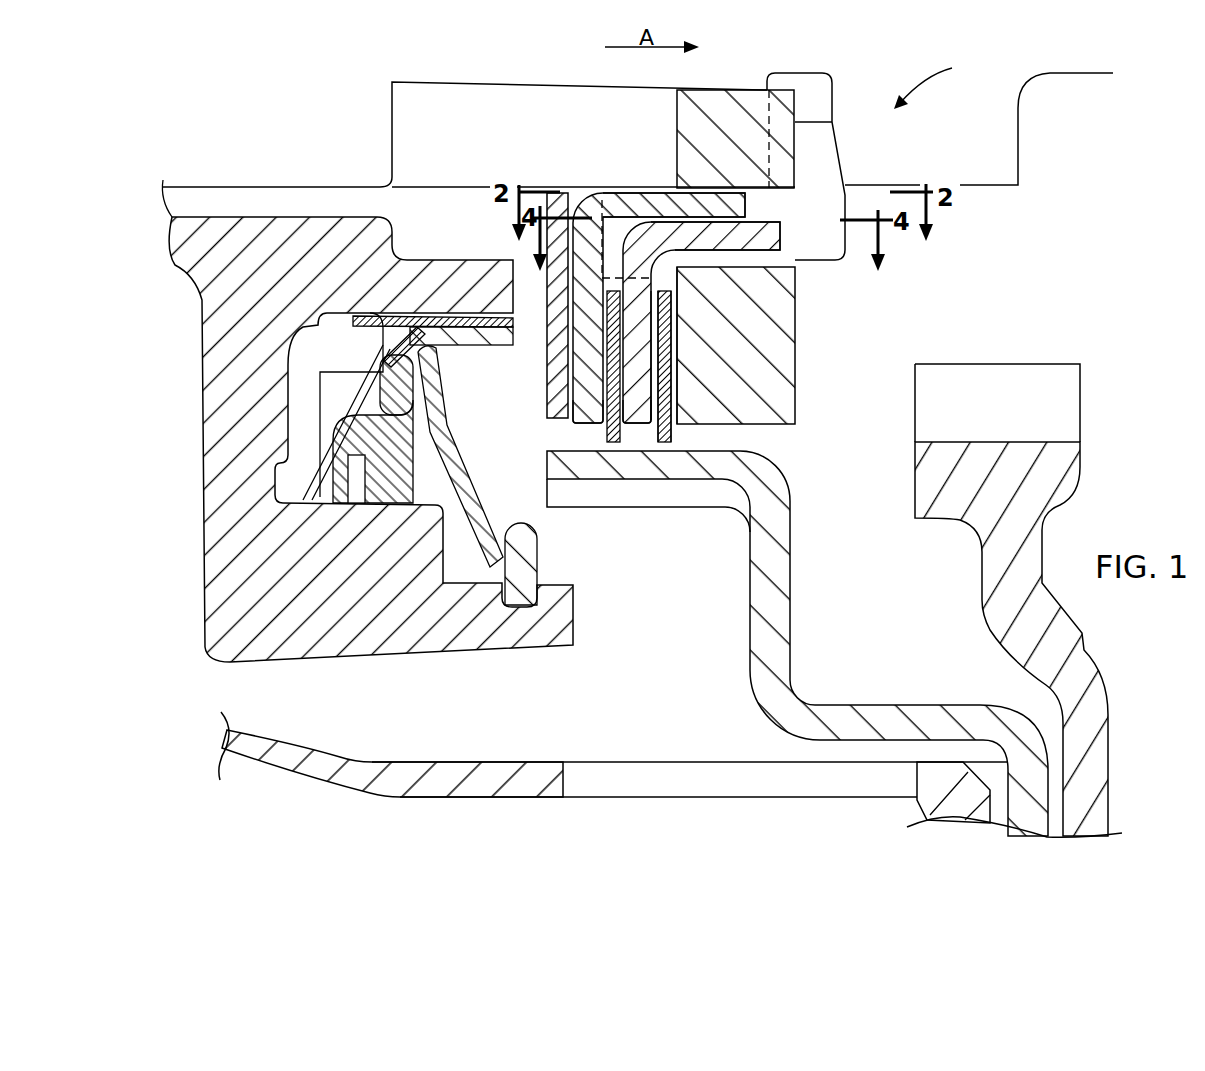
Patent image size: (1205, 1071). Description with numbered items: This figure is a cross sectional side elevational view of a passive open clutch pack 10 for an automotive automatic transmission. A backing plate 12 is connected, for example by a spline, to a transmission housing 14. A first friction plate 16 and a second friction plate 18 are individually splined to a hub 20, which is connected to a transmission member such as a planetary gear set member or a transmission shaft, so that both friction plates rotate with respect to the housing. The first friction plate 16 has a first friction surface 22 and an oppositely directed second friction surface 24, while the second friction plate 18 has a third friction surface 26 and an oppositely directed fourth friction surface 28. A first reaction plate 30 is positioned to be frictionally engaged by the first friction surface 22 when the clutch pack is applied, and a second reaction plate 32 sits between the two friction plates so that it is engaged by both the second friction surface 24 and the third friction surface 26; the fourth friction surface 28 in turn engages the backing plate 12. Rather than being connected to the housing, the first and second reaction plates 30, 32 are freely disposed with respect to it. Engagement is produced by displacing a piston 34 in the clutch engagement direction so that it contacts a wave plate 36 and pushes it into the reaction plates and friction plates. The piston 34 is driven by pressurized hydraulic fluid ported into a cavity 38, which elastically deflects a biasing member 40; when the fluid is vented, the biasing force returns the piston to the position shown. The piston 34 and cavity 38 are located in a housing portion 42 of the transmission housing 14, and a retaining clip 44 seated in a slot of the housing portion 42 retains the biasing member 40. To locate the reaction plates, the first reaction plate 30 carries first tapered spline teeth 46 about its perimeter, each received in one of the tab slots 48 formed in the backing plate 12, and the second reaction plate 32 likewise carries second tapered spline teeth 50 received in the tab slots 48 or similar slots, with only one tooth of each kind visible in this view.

The passive open clutch pack 10 is at (939, 76).
The backing plate 12 is at (780, 287).
The transmission housing 14 is at (541, 102).
The first friction plate 16 is at (614, 445).
The second friction plate 18 is at (663, 445).
The hub 20 is at (717, 465).
The first friction surface 22 is at (600, 340).
The second friction surface 24 is at (630, 372).
The third friction surface 26 is at (658, 300).
The fourth friction surface 28 is at (678, 355).
The first reaction plate 30 is at (588, 425).
The second reaction plate 32 is at (638, 425).
The piston 34 is at (470, 338).
The wave plate 36 is at (548, 300).
The cavity 38 is at (305, 368).
The biasing member 40 is at (455, 490).
The housing portion 42 is at (228, 255).
The retaining clip 44 is at (518, 600).
The first tapered spline teeth 46 is at (690, 205).
The tab slots 48 is at (788, 205).
The second tapered spline teeth 50 is at (760, 222).